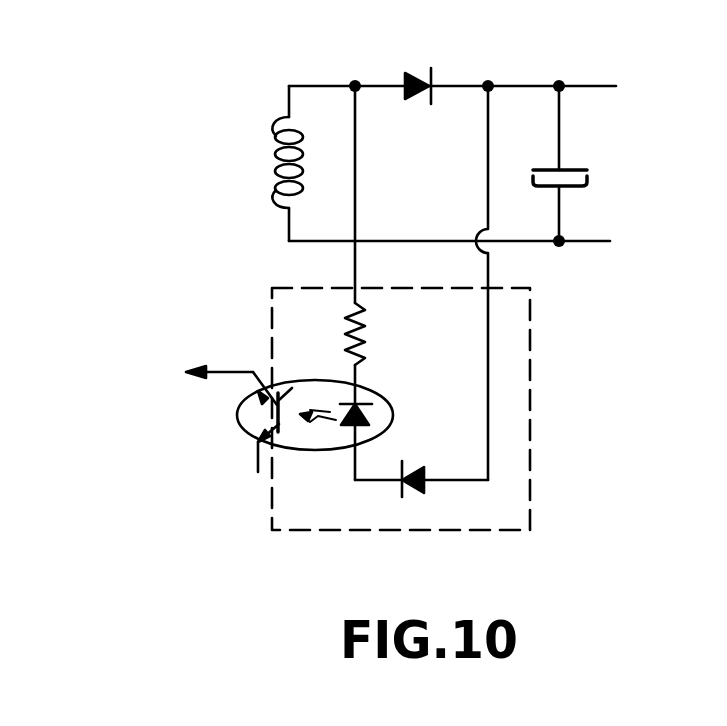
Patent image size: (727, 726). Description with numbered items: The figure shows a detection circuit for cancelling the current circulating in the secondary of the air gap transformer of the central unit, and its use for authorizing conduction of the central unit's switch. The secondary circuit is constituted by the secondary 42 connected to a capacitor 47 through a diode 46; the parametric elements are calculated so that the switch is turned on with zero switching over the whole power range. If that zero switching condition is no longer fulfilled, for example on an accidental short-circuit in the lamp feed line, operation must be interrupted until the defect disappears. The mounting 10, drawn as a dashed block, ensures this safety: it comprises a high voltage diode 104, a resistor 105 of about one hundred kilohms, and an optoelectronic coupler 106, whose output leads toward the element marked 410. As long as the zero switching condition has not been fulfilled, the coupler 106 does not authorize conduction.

The diode 46 is at (420, 74).
The secondary 42 is at (278, 156).
The capacitor 47 is at (568, 172).
The mounting 10 is at (530, 358).
The resistor 105 is at (368, 339).
The high voltage diode 104 is at (420, 468).
The optoelectronic coupler 106 is at (288, 385).
The connection to element 410 is at (144, 369).